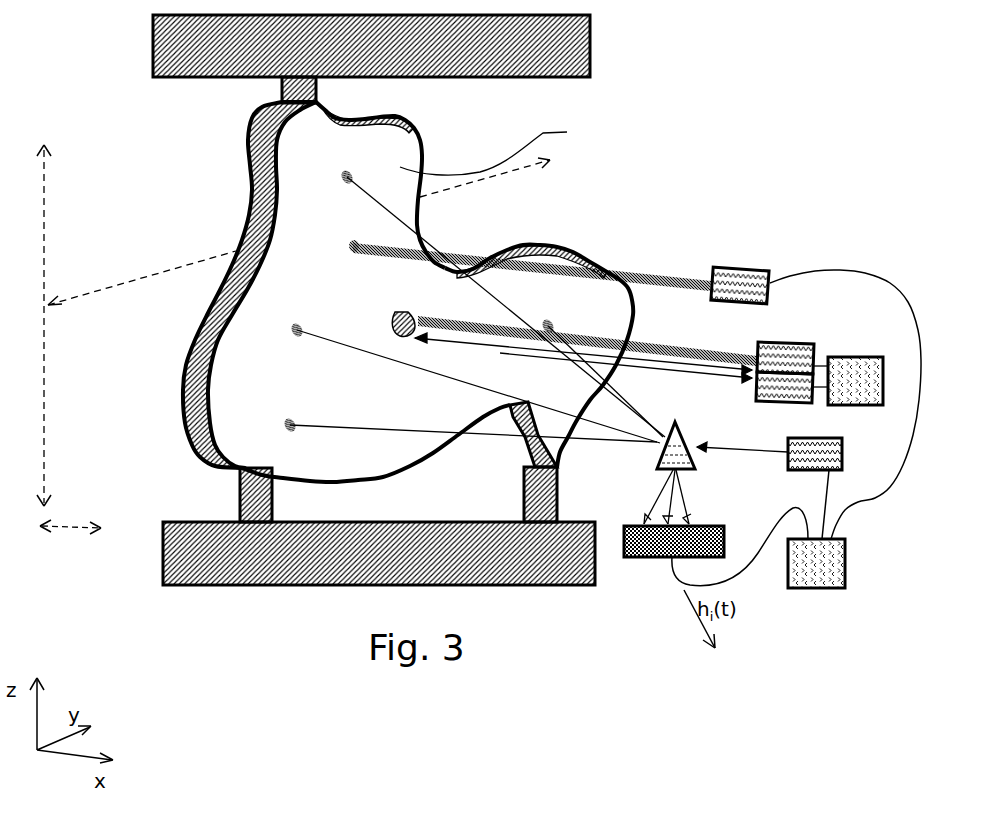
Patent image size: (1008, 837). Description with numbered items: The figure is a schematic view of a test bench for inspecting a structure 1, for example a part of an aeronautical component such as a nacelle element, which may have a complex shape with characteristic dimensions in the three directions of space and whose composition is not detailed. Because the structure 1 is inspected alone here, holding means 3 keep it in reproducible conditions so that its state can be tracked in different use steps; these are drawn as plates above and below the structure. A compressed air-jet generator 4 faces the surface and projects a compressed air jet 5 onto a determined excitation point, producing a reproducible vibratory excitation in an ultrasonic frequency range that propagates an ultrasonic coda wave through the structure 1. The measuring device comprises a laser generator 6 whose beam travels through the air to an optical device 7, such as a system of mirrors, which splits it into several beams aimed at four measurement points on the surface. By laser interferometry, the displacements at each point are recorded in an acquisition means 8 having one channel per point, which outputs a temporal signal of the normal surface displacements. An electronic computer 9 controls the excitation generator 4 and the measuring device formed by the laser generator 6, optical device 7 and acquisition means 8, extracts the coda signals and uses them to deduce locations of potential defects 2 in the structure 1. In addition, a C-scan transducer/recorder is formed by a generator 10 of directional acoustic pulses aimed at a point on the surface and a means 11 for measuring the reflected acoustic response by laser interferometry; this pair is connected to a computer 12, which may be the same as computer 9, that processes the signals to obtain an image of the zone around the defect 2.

The structure 1 is at (243, 237).
The defect 2 is at (398, 338).
The holding means 3 is at (246, 47).
The compressed air-jet generator 4 is at (741, 286).
The compressed air jet 5 is at (658, 282).
The laser generator 6 is at (797, 472).
The optical device 7 is at (688, 440).
The acquisition means 8 is at (645, 560).
The electronic computer 9 is at (800, 590).
The generator of directional acoustic pulses 10 is at (783, 346).
The means for measuring the acoustic response 11 is at (777, 393).
The computer 12 is at (838, 356).